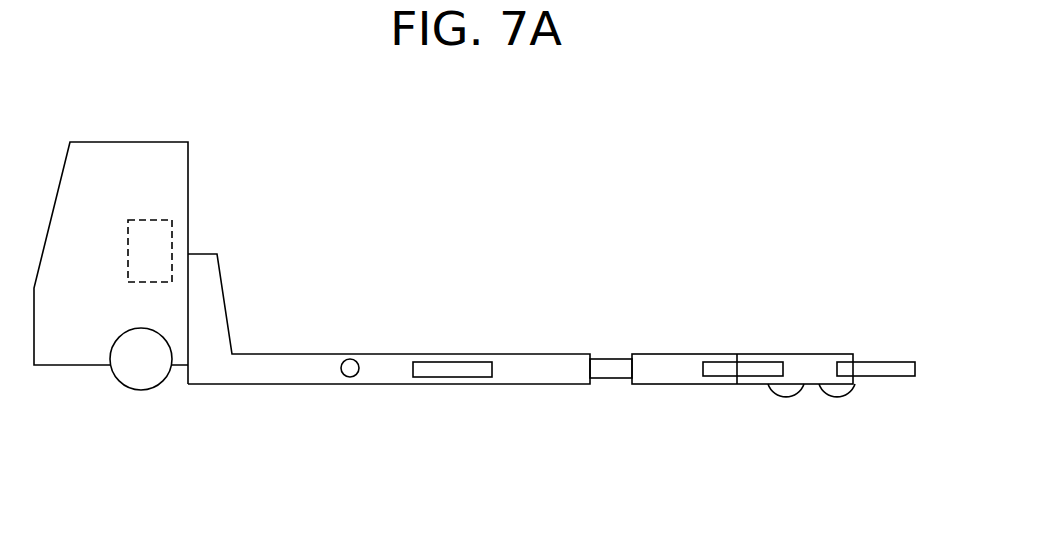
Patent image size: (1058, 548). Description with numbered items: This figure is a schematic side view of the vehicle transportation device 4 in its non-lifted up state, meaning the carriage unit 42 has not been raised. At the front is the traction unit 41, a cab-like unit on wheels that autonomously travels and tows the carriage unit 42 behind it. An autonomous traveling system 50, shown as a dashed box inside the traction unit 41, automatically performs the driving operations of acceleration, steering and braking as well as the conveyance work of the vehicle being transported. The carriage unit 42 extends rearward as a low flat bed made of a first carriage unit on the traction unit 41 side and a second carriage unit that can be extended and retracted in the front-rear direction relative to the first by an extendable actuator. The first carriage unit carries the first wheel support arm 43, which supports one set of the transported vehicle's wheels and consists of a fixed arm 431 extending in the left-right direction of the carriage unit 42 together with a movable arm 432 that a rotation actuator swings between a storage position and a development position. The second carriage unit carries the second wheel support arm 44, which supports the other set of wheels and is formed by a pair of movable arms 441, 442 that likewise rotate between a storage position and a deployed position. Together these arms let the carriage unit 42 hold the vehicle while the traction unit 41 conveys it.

The vehicle transportation device 4 is at (303, 156).
The traction unit 41 is at (114, 162).
The autonomous traveling system 50 is at (128, 257).
The carriage unit 42 is at (385, 367).
The first wheel support arm 43 is at (438, 423).
The fixed arm 431 is at (350, 377).
The movable arm 432 is at (437, 378).
The second wheel support arm 44 is at (875, 243).
The movable arm 441 is at (748, 368).
The movable arm 442 is at (878, 365).